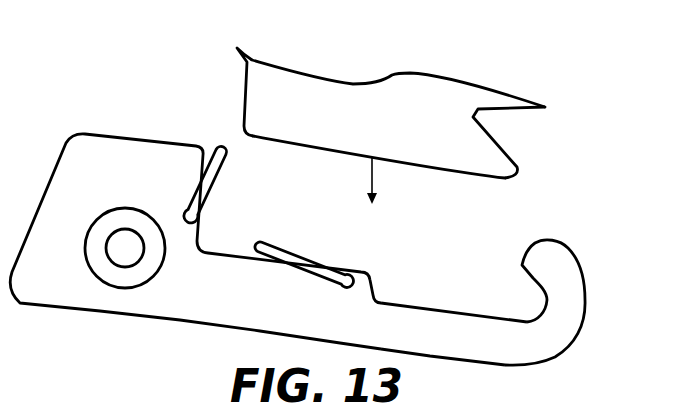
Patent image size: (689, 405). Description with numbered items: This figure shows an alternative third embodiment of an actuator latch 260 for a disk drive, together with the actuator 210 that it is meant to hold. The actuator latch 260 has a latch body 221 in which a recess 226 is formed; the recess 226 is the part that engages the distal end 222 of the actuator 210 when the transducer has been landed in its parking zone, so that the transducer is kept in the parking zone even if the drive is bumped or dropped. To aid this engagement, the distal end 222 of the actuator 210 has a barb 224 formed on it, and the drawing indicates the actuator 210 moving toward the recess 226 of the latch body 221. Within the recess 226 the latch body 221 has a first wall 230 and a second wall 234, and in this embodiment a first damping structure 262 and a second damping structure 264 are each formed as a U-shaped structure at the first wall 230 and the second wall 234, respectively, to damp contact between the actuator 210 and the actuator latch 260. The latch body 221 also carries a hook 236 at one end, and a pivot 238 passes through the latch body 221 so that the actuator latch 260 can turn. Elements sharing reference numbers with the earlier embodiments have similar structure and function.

The actuator 210 is at (409, 71).
The distal end 222 is at (241, 92).
The barb 224 is at (511, 155).
The recess 226 is at (497, 220).
The actuator latch 260 is at (110, 129).
The latch body 221 is at (191, 302).
The pivot 238 is at (121, 204).
The first wall 230 is at (188, 187).
The first damping structure 262 is at (224, 180).
The second damping structure 264 is at (294, 247).
The second wall 234 is at (308, 282).
The hook 236 is at (572, 248).